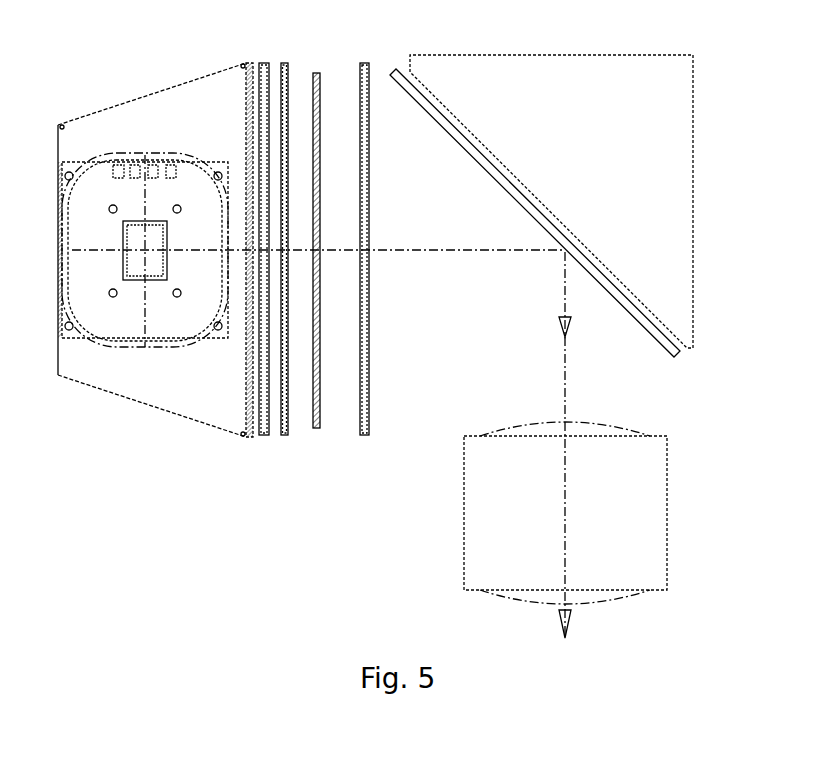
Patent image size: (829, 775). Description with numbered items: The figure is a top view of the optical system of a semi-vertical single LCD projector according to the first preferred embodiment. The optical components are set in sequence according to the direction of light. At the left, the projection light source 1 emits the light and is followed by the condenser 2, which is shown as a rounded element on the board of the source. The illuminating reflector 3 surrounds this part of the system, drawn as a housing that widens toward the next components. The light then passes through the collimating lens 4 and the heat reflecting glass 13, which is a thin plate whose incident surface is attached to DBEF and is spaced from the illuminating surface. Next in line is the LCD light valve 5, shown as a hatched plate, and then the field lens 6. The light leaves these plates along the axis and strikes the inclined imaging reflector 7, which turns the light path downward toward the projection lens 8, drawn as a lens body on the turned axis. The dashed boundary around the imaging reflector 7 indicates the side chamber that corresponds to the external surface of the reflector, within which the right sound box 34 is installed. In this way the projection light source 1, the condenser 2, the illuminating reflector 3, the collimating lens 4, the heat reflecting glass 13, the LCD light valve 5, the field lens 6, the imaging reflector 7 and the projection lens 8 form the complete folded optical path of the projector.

The projection light source 1 is at (75, 338).
The condenser 2 is at (142, 347).
The illuminating reflector 3 is at (195, 410).
The collimating lens 4 is at (260, 437).
The heat reflecting glass 13 is at (281, 437).
The LCD light valve 5 is at (317, 430).
The field lens 6 is at (361, 437).
The imaging reflector 7 is at (674, 355).
The right sound box 34 is at (685, 158).
The projection lens 8 is at (473, 582).